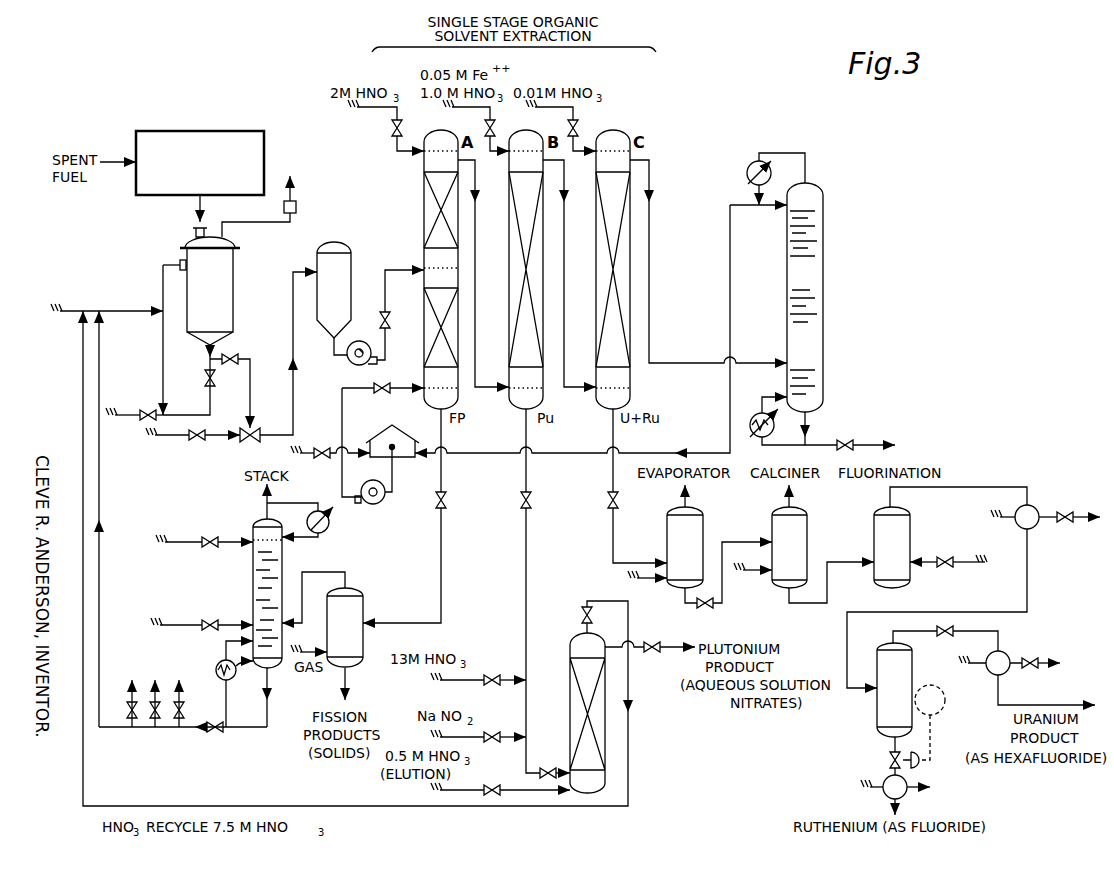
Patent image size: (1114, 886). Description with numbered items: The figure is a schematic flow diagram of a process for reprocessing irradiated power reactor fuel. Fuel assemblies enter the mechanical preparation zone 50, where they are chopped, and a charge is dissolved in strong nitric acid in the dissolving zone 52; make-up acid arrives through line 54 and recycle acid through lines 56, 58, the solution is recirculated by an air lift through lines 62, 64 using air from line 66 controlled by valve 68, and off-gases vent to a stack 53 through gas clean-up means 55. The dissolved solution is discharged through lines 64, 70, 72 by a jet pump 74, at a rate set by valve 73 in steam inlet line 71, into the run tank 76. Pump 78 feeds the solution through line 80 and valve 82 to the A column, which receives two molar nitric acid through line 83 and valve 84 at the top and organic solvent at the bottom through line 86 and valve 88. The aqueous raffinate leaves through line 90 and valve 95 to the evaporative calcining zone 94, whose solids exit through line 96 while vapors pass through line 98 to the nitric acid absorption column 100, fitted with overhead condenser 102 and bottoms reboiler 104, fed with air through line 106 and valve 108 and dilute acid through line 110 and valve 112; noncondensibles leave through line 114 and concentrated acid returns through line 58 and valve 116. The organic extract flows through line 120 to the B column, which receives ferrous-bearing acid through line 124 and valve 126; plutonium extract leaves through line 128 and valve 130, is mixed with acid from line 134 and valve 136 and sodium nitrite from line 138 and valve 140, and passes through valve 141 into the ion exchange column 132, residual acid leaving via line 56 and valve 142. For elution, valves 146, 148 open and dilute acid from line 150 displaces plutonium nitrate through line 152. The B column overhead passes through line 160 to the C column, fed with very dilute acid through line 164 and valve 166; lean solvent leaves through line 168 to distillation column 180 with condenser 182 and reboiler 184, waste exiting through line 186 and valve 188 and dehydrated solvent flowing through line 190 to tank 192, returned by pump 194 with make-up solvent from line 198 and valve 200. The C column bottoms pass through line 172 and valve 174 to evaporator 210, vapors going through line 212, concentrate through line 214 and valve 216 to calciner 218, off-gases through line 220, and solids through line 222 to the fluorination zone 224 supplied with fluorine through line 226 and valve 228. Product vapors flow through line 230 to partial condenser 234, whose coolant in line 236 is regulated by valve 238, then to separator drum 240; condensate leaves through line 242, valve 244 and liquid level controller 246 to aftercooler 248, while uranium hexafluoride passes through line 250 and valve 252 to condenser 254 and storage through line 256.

The mechanical preparation zone 50 is at (264, 133).
The dissolving zone 52 is at (233, 272).
The stack 53 is at (268, 215).
The make-up acid line 54 is at (74, 315).
The gas clean-up means 55 is at (296, 207).
The recycle acid line 56 is at (81, 358).
The recycle acid line 58 is at (105, 358).
The recirculation line 62 is at (163, 265).
The dissolver line 64 is at (206, 359).
The air line 66 is at (130, 419).
The air valve 68 is at (148, 409).
The discharge line 70 is at (244, 358).
The steam inlet line 71 is at (174, 438).
The transfer line 72 is at (292, 302).
The steam valve 73 is at (214, 447).
The jet pump 74 is at (261, 431).
The run tank 76 is at (351, 262).
The pump 78 is at (347, 362).
The feed line 80 is at (385, 288).
The feed valve 82 is at (387, 326).
The dilute nitric acid line 83 is at (365, 108).
The valve 84 is at (405, 124).
The organic solvent line 86 is at (339, 390).
The solvent valve 88 is at (399, 398).
The aqueous raffinate line 90 is at (442, 566).
The evaporative calcining zone 94 is at (363, 600).
The raffinate valve 95 is at (446, 500).
The solids discharge line 96 is at (352, 688).
The vapor line 98 is at (310, 576).
The nitric acid absorption column 100 is at (253, 582).
The overhead condenser 102 is at (329, 527).
The bottoms reboiler 104 is at (228, 681).
The oxidizing gas line 106 is at (171, 622).
The valve 108 is at (209, 620).
The dilute nitric acid line 110 is at (180, 546).
The valve 112 is at (209, 537).
The off-gas line 114 is at (262, 504).
The valve 116 is at (224, 731).
The organic extract line 120 is at (477, 195).
The ferrous nitric acid line 124 is at (475, 108).
The valve 126 is at (498, 124).
The aqueous plutonium extract line 128 is at (532, 545).
The valve 130 is at (533, 500).
The ion exchange column 132 is at (570, 665).
The strong nitric acid line 134 is at (462, 683).
The valve 136 is at (504, 690).
The sodium nitrite line 138 is at (467, 723).
The valve 140 is at (505, 747).
The inlet valve 141 is at (551, 763).
The outlet valve 142 is at (592, 626).
The eluent valve 146 is at (500, 788).
The product valve 148 is at (665, 657).
The eluent line 150 is at (447, 791).
The plutonium product line 152 is at (672, 643).
The organic raffinate line 160 is at (566, 195).
The very dilute nitric acid line 164 is at (559, 108).
The valve 166 is at (581, 124).
The lean solvent line 168 is at (650, 185).
The aqueous uranium extract line 172 is at (617, 545).
The valve 174 is at (621, 500).
The distillation column 180 is at (823, 223).
The overhead condenser 182 is at (750, 167).
The bottoms reboiler 184 is at (752, 415).
The bottoms line 186 is at (870, 444).
The valve 188 is at (843, 439).
The dehydrated solvent line 190 is at (566, 455).
The solvent tank 192 is at (397, 427).
The solvent pump 194 is at (385, 501).
The fresh solvent line 198 is at (301, 450).
The valve 200 is at (339, 462).
The evaporator 210 is at (703, 545).
The vapor line 212 is at (688, 497).
The concentrate line 214 is at (722, 590).
The valve 216 is at (706, 610).
The calciner 218 is at (807, 545).
The calciner off-gas line 220 is at (792, 497).
The calcined solids line 222 is at (827, 583).
The fluorination zone 224 is at (910, 545).
The fluorine line 226 is at (923, 566).
The valve 228 is at (949, 569).
The fluorination product vapor line 230 is at (982, 485).
The partial condenser 234 is at (1036, 527).
The coolant line 236 is at (1003, 525).
The coolant valve 238 is at (1060, 514).
The separator drum 240 is at (912, 669).
The condensate line 242 is at (893, 745).
The valve 244 is at (889, 763).
The liquid level controller 246 is at (941, 713).
The aftercooler 248 is at (912, 800).
The uranium hexafluoride vapor line 250 is at (893, 637).
The valve 252 is at (962, 642).
The condenser 254 is at (1004, 657).
The uranium hexafluoride product line 256 is at (1063, 705).